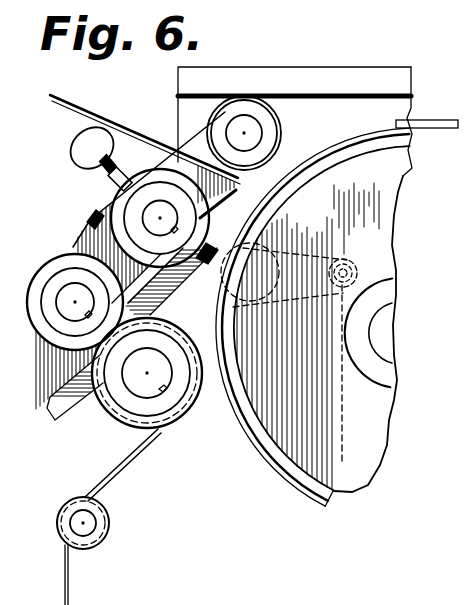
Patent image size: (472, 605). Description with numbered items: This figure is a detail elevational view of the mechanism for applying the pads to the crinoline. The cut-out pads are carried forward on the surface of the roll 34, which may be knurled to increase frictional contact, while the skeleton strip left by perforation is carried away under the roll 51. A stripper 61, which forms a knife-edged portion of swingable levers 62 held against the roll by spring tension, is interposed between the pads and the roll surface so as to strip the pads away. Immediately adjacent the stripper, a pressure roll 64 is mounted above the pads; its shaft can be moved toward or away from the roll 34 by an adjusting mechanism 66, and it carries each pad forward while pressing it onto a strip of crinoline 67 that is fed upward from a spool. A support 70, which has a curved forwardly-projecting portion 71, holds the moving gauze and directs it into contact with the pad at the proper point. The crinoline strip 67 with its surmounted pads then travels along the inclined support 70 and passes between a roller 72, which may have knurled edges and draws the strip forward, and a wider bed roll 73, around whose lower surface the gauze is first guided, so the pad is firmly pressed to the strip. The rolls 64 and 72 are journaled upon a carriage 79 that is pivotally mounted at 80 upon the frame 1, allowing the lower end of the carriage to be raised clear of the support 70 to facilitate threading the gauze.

The frame 1 is at (367, 78).
The roll 34 is at (262, 460).
The roll 51 is at (279, 132).
The stripper 61 is at (228, 243).
The swingable lever 62 is at (305, 257).
The pressure roll 64 is at (122, 205).
The adjusting mechanism 66 is at (103, 170).
The strip of crinoline 67 is at (69, 578).
The support 70 is at (67, 400).
The curved forwardly-projecting portion 71 is at (172, 281).
The roller 72 is at (50, 262).
The bed roll 73 is at (130, 398).
The carriage 79 is at (177, 147).
The pivot 80 is at (244, 133).